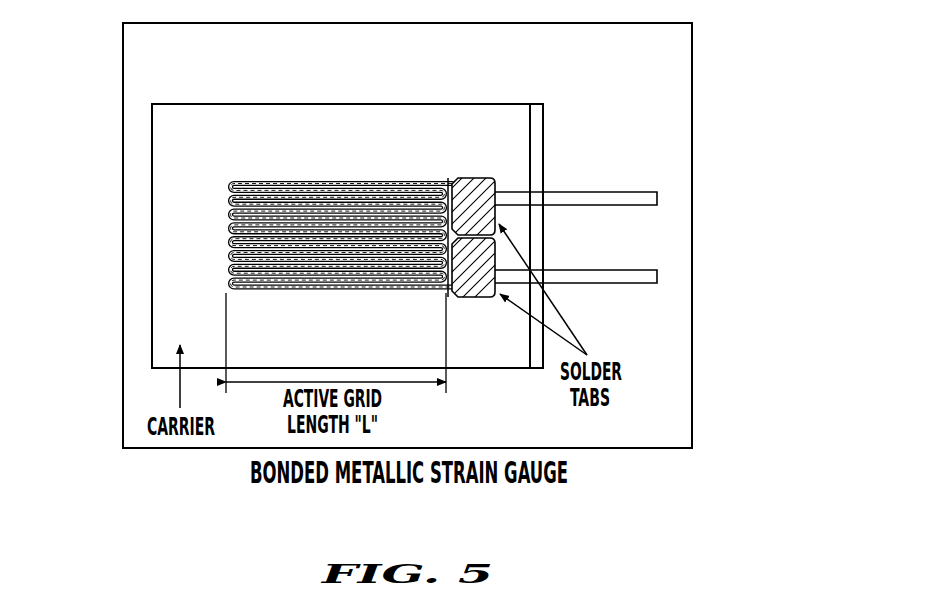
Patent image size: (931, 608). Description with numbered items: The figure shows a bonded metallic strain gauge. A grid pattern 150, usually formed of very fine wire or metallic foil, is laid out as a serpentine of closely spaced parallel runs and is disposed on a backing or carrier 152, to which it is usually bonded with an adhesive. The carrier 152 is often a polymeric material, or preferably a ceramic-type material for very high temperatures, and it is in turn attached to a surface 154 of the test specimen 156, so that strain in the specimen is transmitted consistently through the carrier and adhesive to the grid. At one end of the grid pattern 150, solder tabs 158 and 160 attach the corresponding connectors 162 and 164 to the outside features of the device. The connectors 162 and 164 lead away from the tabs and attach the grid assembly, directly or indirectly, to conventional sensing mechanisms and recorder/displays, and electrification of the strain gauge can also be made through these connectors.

The grid pattern 150 is at (320, 188).
The carrier 152 is at (152, 298).
The surface 154 is at (651, 88).
The test specimen 156 is at (693, 241).
The solder tab 158 is at (468, 178).
The solder tab 160 is at (466, 297).
The connector 162 is at (617, 190).
The connector 164 is at (617, 284).